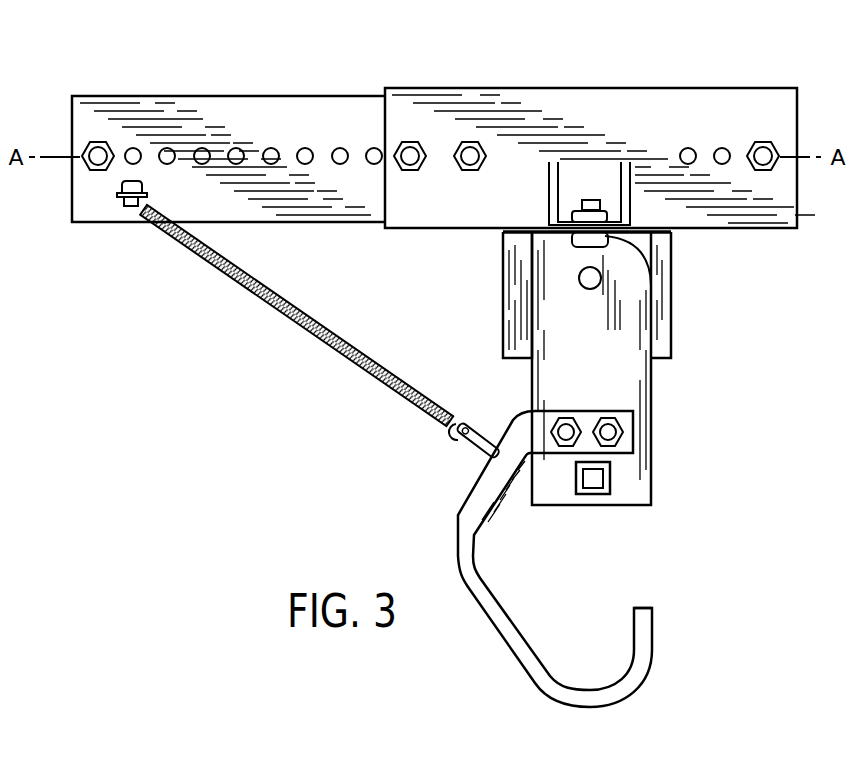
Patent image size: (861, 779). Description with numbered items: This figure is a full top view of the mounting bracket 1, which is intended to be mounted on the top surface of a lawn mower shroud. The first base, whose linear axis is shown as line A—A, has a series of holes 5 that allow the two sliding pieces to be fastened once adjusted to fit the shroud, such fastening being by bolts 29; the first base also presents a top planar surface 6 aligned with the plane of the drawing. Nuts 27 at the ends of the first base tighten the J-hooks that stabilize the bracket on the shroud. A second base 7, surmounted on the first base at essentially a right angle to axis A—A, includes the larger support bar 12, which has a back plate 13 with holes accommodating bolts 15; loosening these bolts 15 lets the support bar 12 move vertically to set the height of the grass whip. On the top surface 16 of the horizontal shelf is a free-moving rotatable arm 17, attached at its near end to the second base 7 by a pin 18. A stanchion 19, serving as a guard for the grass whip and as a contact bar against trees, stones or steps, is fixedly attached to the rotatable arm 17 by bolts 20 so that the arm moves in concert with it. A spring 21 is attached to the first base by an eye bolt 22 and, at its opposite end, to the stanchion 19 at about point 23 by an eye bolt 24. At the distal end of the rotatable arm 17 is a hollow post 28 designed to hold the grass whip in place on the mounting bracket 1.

The mounting bracket 1 is at (762, 66).
The holes 5 is at (302, 148).
The top planar surface 6 is at (557, 118).
The second base 7 is at (664, 282).
The support bar 12 is at (607, 343).
The back plate 13 is at (533, 228).
The bolts 15 is at (590, 200).
The top surface 16 is at (517, 281).
The rotatable arm 17 is at (652, 481).
The pin 18 is at (590, 290).
The stanchion 19 is at (652, 614).
The bolts 20 is at (608, 416).
The spring 21 is at (306, 334).
The eye bolt 22 is at (130, 206).
The attachment point 23 is at (595, 532).
The eye bolt 24 is at (451, 444).
The nuts 27 is at (100, 140).
The hollow post 28 is at (593, 495).
The bolts 29 is at (468, 144).